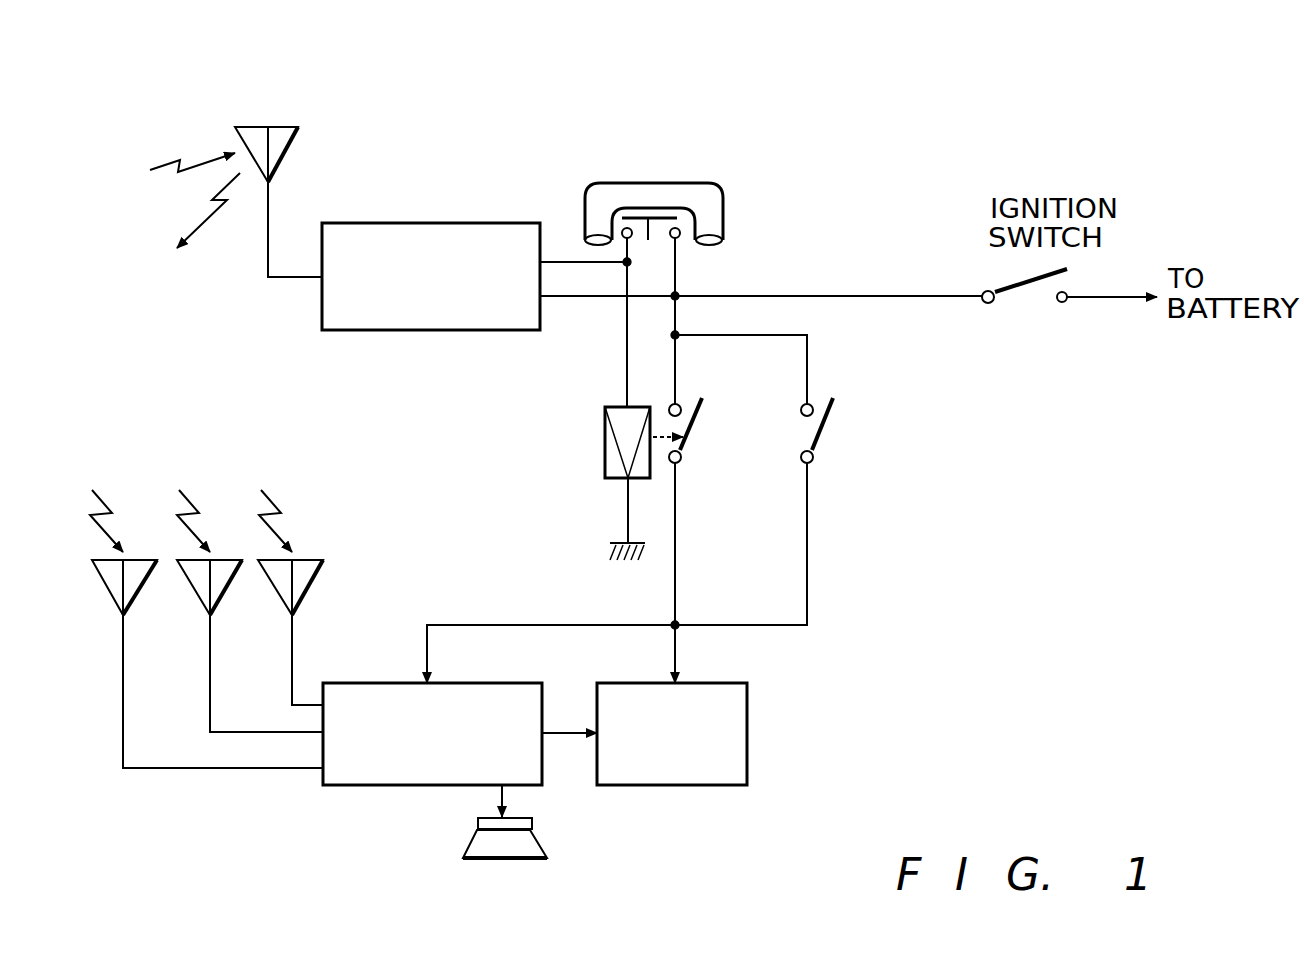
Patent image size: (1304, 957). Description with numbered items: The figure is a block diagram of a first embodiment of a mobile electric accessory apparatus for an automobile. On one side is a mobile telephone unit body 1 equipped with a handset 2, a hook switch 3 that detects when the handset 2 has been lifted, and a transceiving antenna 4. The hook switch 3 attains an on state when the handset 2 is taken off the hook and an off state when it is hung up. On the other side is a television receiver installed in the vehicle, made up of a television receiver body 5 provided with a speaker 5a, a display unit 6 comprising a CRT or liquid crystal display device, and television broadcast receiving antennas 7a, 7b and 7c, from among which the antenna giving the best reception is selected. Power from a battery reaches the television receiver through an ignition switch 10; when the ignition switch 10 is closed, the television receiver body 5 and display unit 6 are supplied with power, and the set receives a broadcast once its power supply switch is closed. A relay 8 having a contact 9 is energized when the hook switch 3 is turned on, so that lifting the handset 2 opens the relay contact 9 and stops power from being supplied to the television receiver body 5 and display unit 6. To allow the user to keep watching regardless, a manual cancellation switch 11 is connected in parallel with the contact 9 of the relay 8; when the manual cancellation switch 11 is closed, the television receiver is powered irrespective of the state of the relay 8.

The mobile telephone unit body 1 is at (485, 230).
The handset 2 is at (693, 188).
The hook switch 3 is at (653, 250).
The transceiving antenna 4 is at (275, 198).
The television receiver body 5 is at (350, 787).
The speaker 5a is at (547, 853).
The display unit 6 is at (687, 788).
The television broadcast receiving antenna 7a is at (122, 668).
The television broadcast receiving antenna 7b is at (208, 668).
The television broadcast receiving antenna 7c is at (288, 653).
The relay 8 is at (603, 420).
The contact 9 is at (702, 418).
The ignition switch 10 is at (1032, 303).
The manual cancellation switch 11 is at (835, 418).